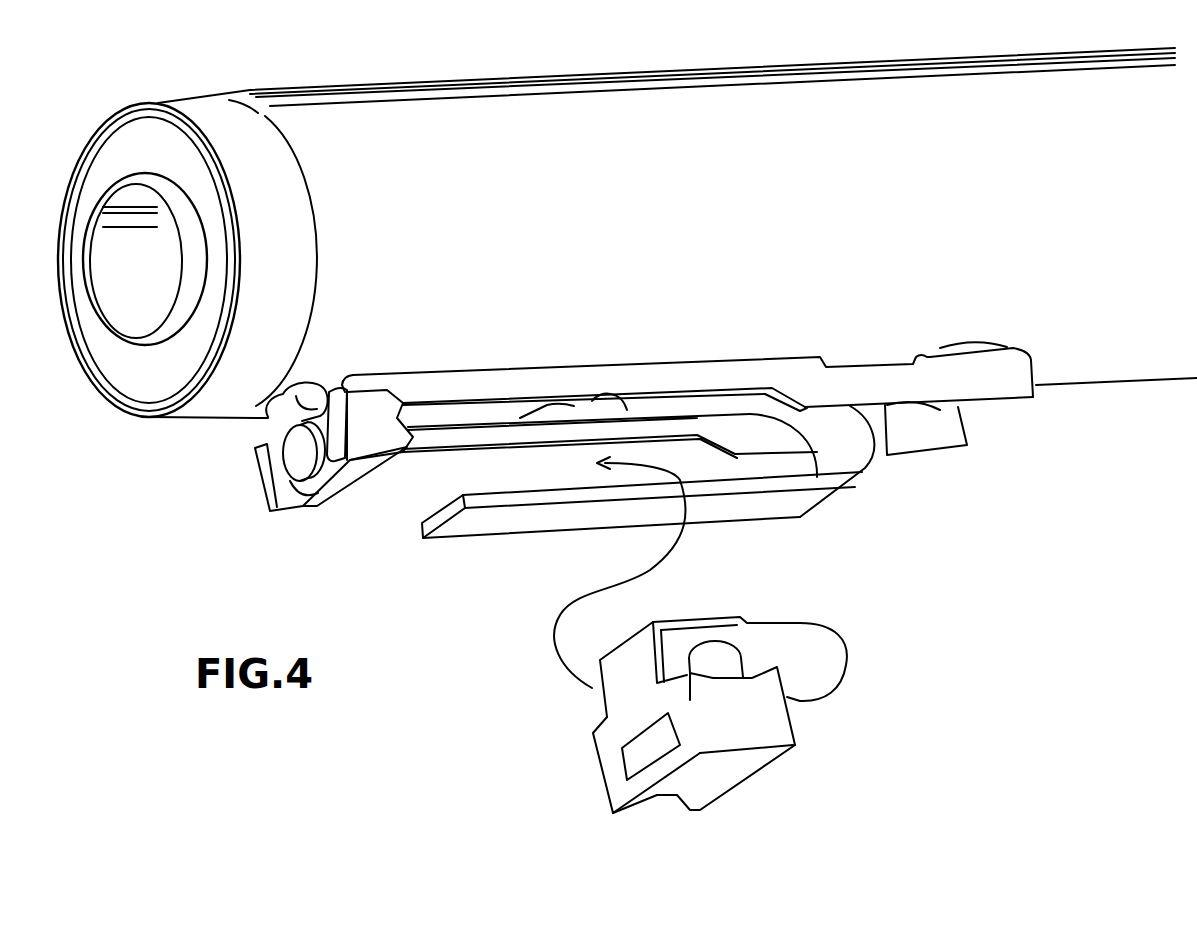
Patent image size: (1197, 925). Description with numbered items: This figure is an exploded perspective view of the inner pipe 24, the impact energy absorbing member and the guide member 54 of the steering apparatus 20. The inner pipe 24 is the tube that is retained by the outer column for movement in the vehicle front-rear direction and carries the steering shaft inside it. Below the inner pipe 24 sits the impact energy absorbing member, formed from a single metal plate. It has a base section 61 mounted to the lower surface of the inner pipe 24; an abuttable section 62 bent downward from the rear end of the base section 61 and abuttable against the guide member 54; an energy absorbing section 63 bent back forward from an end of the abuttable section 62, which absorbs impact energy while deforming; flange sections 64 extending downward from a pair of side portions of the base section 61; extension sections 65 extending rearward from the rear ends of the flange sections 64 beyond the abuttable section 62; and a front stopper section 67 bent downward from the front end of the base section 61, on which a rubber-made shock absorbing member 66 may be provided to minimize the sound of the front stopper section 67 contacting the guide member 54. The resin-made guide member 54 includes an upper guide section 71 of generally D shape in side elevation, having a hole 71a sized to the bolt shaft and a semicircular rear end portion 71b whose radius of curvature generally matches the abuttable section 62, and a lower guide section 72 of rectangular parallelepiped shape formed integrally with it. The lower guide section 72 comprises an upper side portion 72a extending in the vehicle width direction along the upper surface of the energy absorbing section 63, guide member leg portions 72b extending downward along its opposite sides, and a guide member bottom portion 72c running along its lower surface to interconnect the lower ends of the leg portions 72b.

The inner pipe 24 is at (338, 70).
The steering apparatus 20 is at (722, 352).
The base section 61 is at (483, 410).
The abuttable section 62 is at (880, 472).
The energy absorbing section 63 is at (519, 522).
The flange sections 64 is at (585, 385).
The extension sections 65 is at (1007, 373).
The shock absorbing member 66 is at (363, 486).
The front stopper section 67 is at (334, 478).
The guide member 54 is at (595, 748).
The upper guide section 71 is at (787, 650).
The hole 71a is at (730, 655).
The rear end portion 71b is at (845, 664).
The lower guide section 72 is at (742, 718).
The upper side portion 72a is at (640, 722).
The guide member leg portions 72b is at (617, 772).
The guide member bottom portion 72c is at (666, 771).